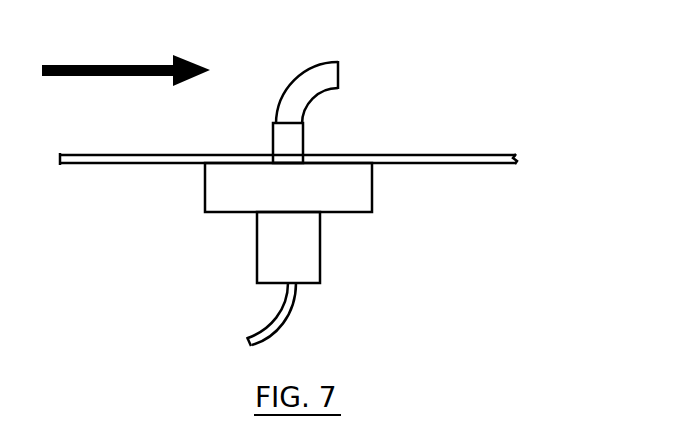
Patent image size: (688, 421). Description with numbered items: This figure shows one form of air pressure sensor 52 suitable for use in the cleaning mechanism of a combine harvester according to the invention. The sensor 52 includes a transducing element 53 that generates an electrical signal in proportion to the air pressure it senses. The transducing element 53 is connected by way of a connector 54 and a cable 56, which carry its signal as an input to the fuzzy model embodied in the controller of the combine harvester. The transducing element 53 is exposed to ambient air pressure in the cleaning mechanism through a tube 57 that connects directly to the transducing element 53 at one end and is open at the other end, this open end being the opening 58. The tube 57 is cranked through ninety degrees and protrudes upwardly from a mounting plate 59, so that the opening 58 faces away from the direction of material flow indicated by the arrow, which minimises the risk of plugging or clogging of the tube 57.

The air pressure sensor 52 is at (405, 130).
The transducing element 53 is at (372, 200).
The connector 54 is at (320, 247).
The cable 56 is at (292, 313).
The tube 57 is at (285, 90).
The opening 58 is at (341, 80).
The mounting plate 59 is at (483, 155).